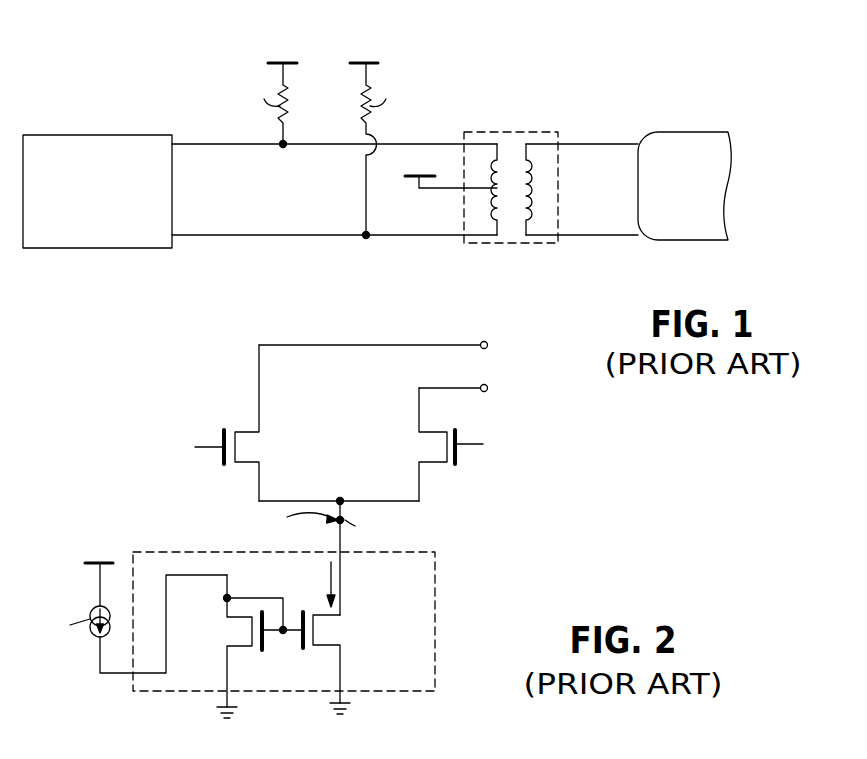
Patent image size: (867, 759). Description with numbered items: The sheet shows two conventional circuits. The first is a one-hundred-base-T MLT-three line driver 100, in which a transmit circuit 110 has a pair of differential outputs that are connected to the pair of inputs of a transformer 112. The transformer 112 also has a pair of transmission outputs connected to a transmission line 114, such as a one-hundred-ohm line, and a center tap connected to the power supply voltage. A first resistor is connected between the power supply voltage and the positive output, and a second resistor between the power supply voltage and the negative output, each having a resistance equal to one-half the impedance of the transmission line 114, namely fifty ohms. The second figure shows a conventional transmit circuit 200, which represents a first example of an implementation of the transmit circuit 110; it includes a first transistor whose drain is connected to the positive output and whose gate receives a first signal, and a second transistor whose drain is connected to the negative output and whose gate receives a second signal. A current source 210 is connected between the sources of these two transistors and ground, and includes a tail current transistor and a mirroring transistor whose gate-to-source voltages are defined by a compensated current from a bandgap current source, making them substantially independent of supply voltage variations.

In FIG. 1, the line driver 100 is at (631, 45).
In FIG. 1, the transmit circuit 110 is at (126, 134).
In FIG. 1, the transformer 112 is at (482, 247).
In FIG. 1, the transmission line 114 is at (660, 243).
In FIG. 2, the transmit circuit 200 is at (148, 365).
In FIG. 2, the current source 210 is at (436, 592).